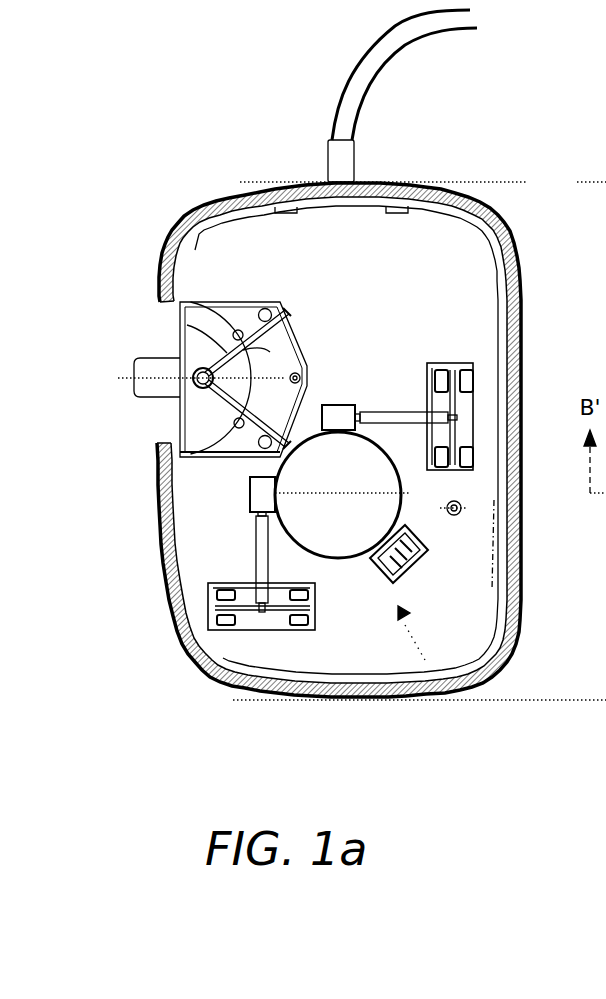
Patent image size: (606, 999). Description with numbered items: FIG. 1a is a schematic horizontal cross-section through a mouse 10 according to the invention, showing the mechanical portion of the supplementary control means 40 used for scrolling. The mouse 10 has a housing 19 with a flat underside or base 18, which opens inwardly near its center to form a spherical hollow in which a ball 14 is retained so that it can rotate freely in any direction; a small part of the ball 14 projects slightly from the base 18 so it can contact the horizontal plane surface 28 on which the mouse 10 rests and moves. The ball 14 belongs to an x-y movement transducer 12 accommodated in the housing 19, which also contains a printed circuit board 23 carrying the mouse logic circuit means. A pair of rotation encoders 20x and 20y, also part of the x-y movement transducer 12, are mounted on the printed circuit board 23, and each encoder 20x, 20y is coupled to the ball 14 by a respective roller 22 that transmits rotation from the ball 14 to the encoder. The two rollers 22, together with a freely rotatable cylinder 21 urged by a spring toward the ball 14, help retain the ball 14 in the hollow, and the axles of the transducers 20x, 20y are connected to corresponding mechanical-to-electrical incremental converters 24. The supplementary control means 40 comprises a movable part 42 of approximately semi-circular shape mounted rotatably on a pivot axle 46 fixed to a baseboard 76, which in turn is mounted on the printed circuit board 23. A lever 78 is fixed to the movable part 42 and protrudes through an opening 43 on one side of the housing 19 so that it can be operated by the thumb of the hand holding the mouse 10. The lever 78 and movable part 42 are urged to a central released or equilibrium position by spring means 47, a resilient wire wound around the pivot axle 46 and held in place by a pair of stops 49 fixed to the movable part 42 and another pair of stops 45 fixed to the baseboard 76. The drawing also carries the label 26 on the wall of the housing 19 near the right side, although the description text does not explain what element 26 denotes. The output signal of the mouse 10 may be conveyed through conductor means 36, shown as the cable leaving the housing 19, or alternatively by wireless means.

The mouse 10 is at (160, 607).
The x-y movement transducer 12 is at (419, 751).
The ball 14 is at (352, 543).
The base 18 is at (605, 232).
The housing 19 is at (605, 672).
The rotation encoder 20x is at (482, 398).
The rotation encoder 20y is at (243, 546).
The freely rotatable cylinder 21 is at (430, 557).
The roller 22 is at (333, 405).
The printed circuit board 23 is at (463, 590).
The mechanical-to-electrical incremental converter 24 is at (467, 430).
The outer wall 26 is at (605, 540).
The horizontal plane surface 28 is at (605, 185).
The conductor means 36 is at (323, 115).
The supplementary control means 40 is at (108, 388).
The movable part 42 is at (243, 356).
The opening 43 is at (157, 437).
The stops 45 is at (273, 328).
The pivot axle 46 is at (187, 325).
The spring means 47 is at (197, 373).
The stops 49 is at (258, 408).
The baseboard 76 is at (258, 300).
The lever 78 is at (135, 365).